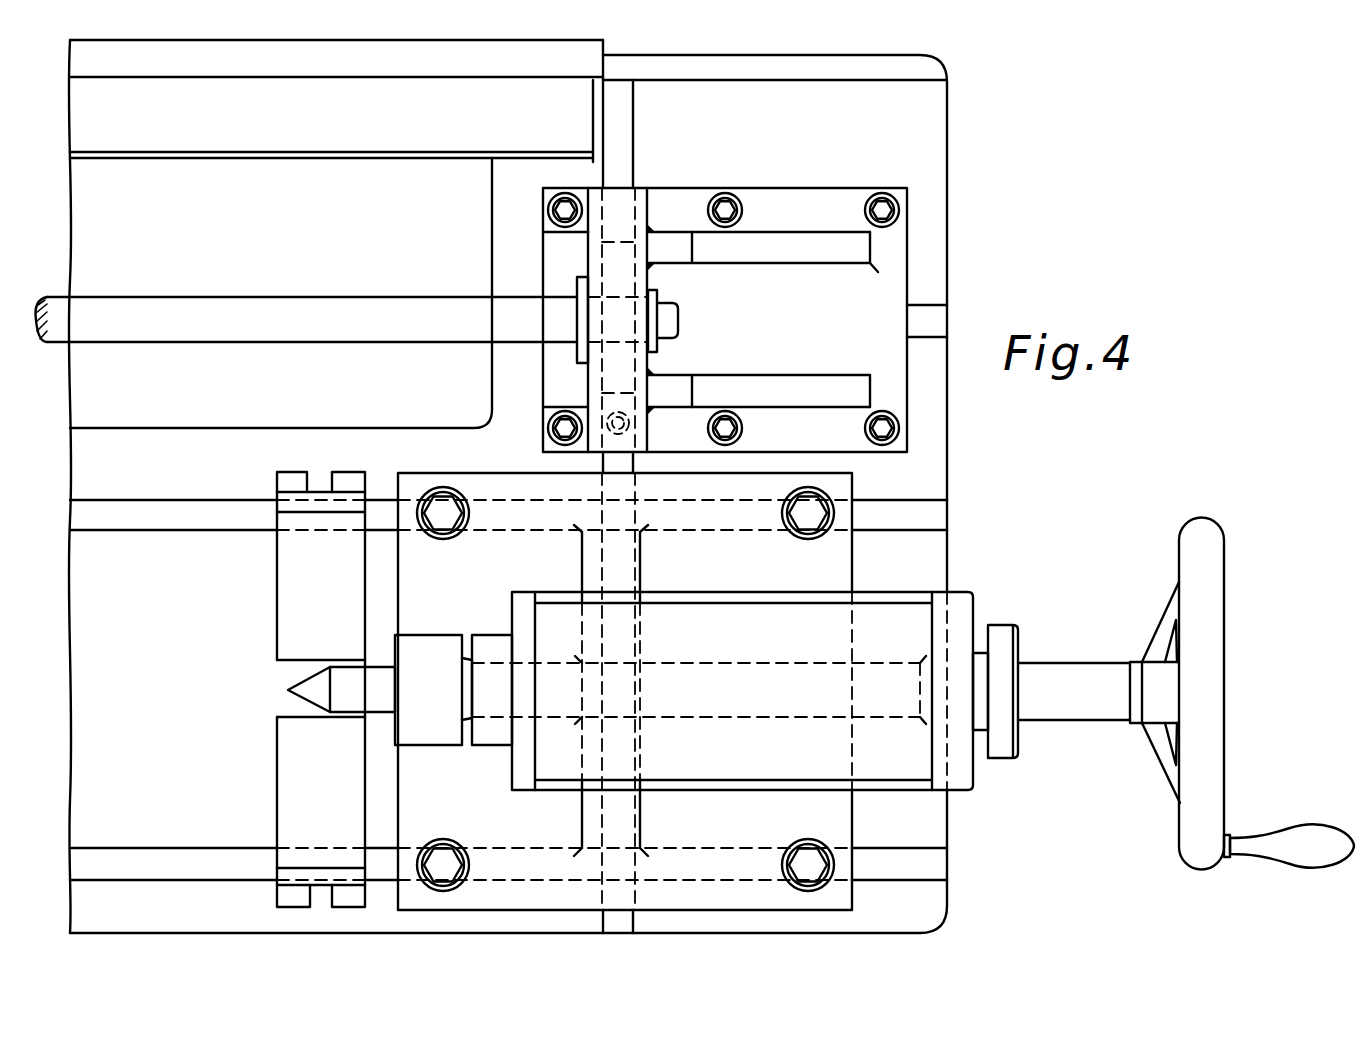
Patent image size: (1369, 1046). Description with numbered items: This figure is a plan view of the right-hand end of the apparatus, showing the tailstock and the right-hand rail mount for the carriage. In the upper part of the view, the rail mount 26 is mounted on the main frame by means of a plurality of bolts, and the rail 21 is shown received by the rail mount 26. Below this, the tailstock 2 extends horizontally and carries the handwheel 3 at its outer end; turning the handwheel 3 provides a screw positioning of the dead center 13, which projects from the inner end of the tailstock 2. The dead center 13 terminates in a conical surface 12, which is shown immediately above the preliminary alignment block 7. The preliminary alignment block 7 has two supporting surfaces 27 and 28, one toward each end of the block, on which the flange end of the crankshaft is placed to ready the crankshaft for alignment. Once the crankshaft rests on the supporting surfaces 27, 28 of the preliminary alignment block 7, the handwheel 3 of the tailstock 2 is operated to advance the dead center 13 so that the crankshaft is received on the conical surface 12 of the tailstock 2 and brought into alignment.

The tailstock 2 is at (954, 595).
The handwheel 3 is at (1217, 606).
The preliminary alignment block 7 is at (292, 689).
The conical surface 12 is at (302, 672).
The dead center 13 is at (340, 668).
The rail 21 is at (185, 300).
The rail mount 26 is at (778, 194).
The supporting surface 27 is at (283, 565).
The supporting surface 28 is at (283, 776).